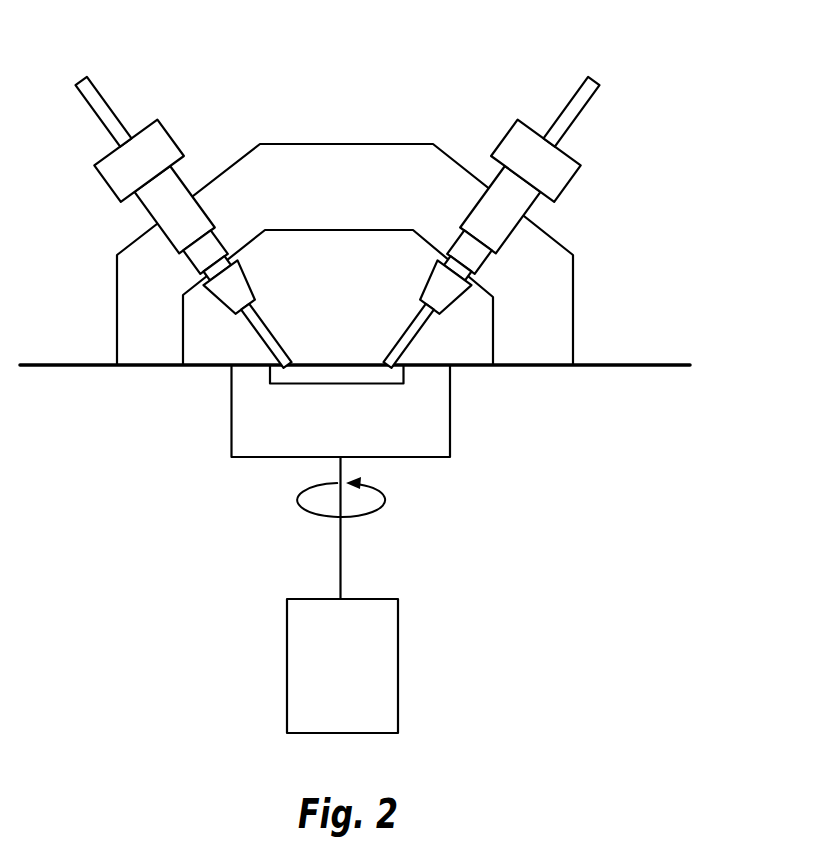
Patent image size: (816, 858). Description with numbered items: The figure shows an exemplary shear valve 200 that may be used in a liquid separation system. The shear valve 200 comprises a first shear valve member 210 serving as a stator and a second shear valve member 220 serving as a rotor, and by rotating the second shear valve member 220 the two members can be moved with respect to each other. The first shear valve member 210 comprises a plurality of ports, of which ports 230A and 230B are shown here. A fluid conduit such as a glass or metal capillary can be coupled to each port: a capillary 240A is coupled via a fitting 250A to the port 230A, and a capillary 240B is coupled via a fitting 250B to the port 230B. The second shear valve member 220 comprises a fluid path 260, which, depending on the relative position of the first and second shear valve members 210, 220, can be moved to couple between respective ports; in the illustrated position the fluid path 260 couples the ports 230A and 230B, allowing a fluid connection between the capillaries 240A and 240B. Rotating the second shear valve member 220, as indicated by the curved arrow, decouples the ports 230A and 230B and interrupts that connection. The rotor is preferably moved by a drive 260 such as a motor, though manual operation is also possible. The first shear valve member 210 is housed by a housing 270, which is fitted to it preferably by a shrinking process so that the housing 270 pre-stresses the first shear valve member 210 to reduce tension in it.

The shear valve 200 is at (542, 463).
The first shear valve member 210 is at (460, 358).
The second shear valve member 220 is at (408, 458).
The port 230A is at (268, 330).
The port 230B is at (398, 340).
The capillary 240A is at (102, 110).
The capillary 240B is at (578, 104).
The fitting 250A is at (158, 143).
The fitting 250B is at (560, 178).
The fluid path 260 is at (310, 375).
The housing 270 is at (328, 150).